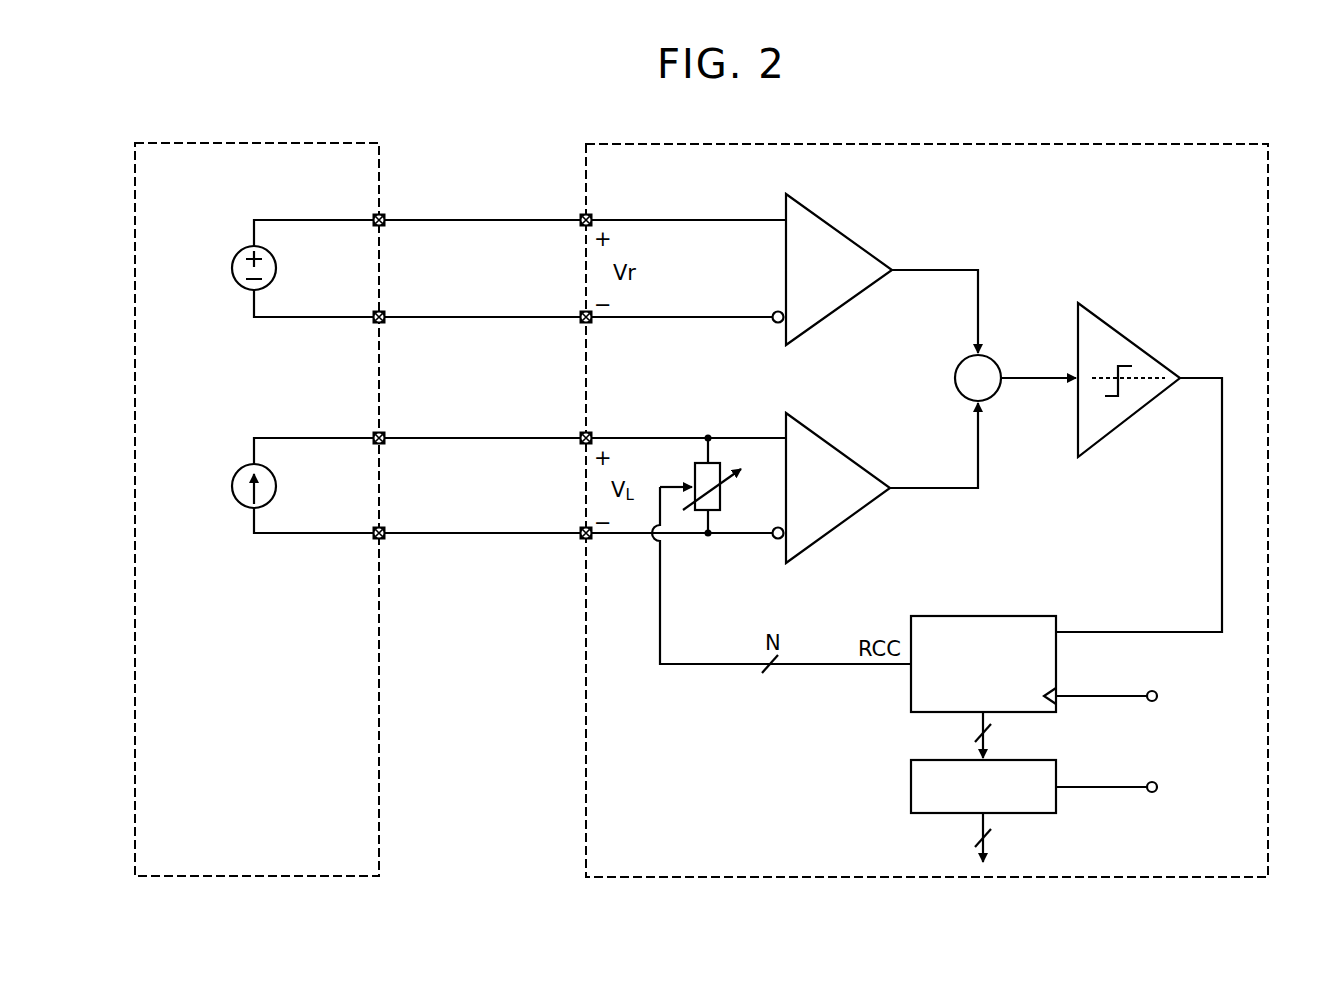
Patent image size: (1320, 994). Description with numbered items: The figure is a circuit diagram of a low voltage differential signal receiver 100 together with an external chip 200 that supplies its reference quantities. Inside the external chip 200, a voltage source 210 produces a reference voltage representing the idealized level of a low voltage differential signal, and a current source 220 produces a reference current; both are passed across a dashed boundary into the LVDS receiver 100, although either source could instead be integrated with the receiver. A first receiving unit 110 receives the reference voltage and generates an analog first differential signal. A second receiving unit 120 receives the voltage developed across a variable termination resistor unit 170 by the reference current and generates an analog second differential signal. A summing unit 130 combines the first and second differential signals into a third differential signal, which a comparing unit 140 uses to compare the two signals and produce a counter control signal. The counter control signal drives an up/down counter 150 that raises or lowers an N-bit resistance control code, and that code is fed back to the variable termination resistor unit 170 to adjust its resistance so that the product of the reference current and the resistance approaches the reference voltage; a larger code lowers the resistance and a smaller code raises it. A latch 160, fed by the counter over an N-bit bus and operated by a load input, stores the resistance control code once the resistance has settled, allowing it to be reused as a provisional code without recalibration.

The LVDS receiver 100 is at (586, 352).
The external chip 200 is at (379, 352).
The first receiving unit 110 is at (852, 234).
The second receiving unit 120 is at (847, 450).
The summing unit 130 is at (993, 358).
The comparing unit 140 is at (1140, 342).
The up/down counter 150 is at (983, 616).
The latch 160 is at (1040, 760).
The variable termination resistor unit 170 is at (722, 467).
The voltage source 210 is at (276, 268).
The current source 220 is at (276, 486).